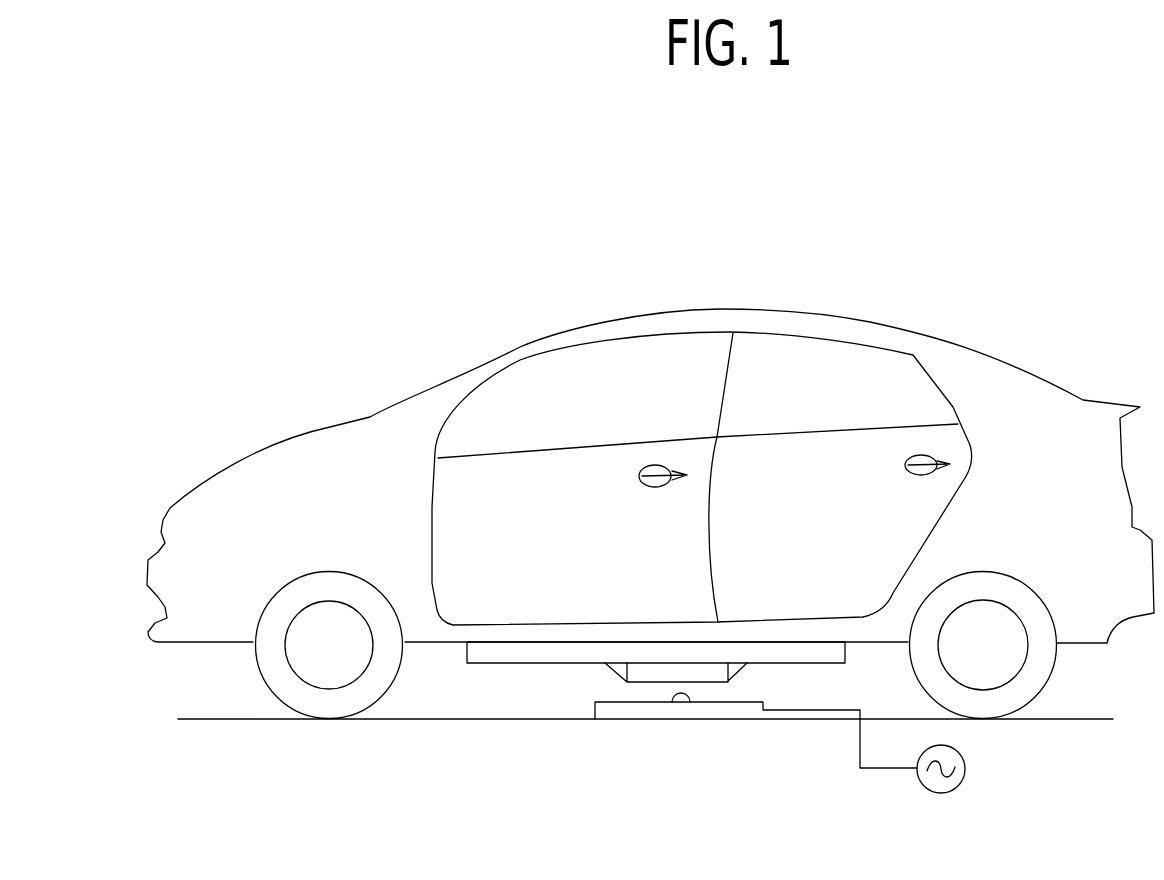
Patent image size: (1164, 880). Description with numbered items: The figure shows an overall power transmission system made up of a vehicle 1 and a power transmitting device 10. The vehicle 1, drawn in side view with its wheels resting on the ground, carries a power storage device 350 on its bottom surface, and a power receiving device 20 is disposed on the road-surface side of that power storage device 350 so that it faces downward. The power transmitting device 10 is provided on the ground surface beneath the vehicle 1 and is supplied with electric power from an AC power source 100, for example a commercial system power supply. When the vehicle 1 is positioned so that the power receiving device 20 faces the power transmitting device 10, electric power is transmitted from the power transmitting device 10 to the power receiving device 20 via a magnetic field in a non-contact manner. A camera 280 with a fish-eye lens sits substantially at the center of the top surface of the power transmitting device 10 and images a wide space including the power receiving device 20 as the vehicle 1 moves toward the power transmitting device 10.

The vehicle 1 is at (824, 270).
The power transmitting device 10 is at (684, 739).
The power receiving device 20 is at (591, 693).
The camera 280 is at (690, 697).
The power storage device 350 is at (503, 652).
The AC power source 100 is at (966, 769).